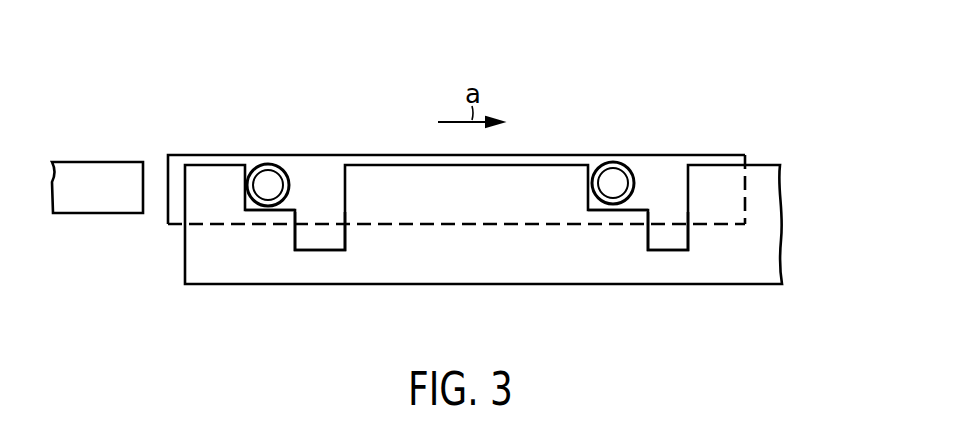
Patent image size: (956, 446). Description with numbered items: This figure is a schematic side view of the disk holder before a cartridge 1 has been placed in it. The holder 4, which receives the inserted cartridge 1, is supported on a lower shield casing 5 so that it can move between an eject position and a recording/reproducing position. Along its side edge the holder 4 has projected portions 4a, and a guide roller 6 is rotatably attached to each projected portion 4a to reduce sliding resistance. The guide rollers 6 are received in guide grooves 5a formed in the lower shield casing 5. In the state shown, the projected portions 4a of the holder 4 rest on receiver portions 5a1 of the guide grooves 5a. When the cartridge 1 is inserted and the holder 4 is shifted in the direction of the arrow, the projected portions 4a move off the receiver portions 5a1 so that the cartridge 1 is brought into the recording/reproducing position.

The cartridge 1 is at (102, 162).
The holder 4 is at (588, 157).
The projected portions 4a is at (267, 193).
The lower shield casing 5 is at (697, 285).
The guide grooves 5a is at (322, 215).
The receiver portions 5a1 is at (296, 208).
The guide rollers 6 is at (270, 163).